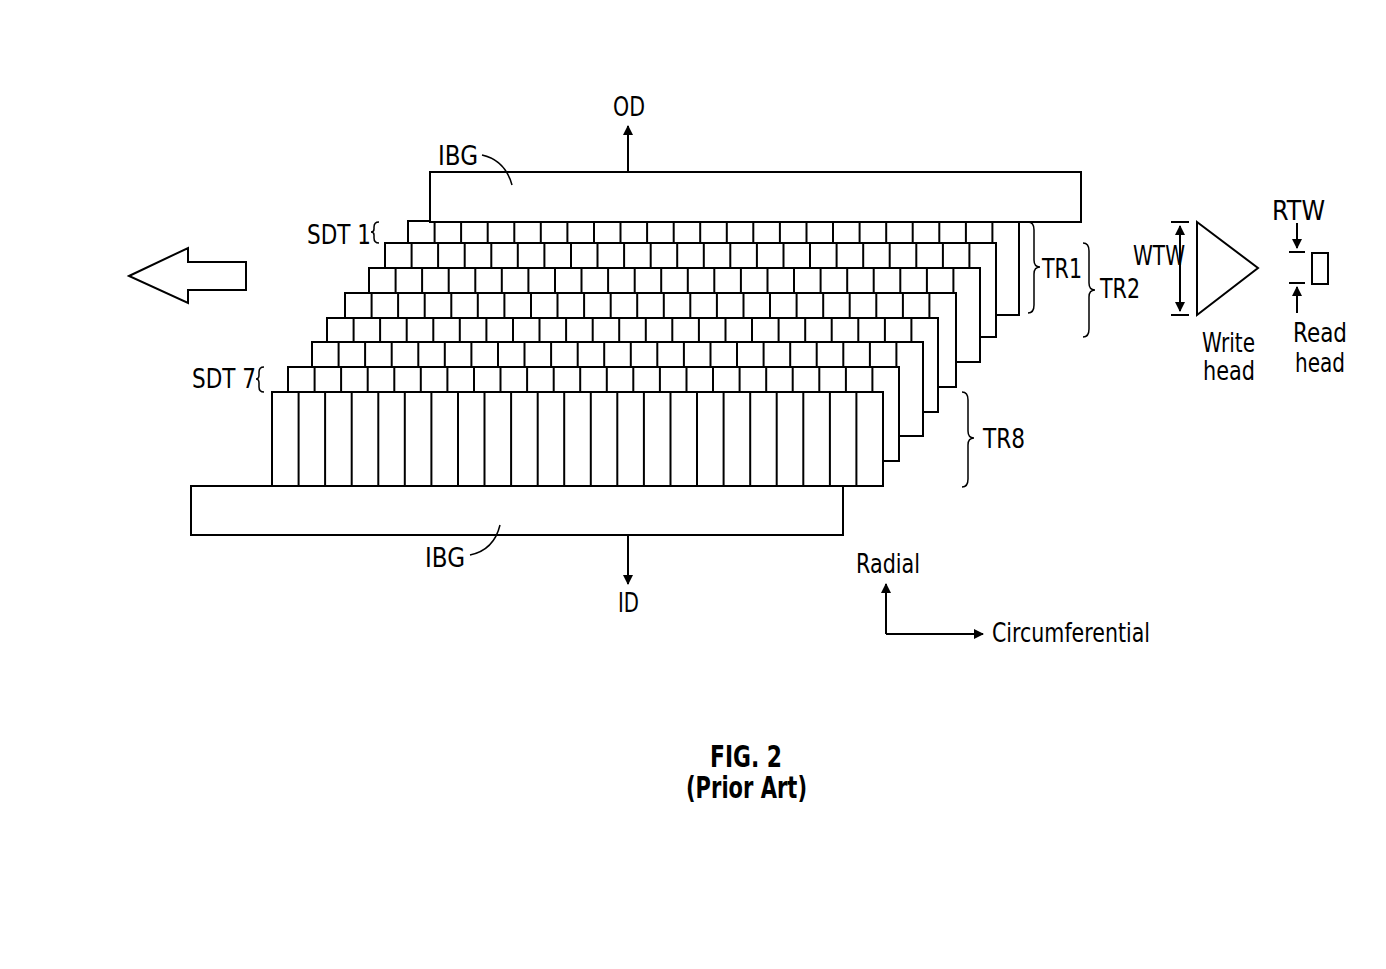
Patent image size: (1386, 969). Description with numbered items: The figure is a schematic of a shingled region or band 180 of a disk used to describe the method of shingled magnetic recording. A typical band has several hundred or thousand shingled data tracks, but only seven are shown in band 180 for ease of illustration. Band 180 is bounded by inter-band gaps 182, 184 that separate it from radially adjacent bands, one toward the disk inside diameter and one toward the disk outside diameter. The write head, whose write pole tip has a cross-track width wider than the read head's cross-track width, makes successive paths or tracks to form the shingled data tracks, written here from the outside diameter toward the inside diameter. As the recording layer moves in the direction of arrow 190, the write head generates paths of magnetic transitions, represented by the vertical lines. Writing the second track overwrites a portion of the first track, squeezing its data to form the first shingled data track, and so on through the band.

The shingled region or band 180 is at (348, 66).
The inter-band gap 182 is at (695, 527).
The inter-band gap 184 is at (925, 185).
The arrow 190 is at (207, 260).